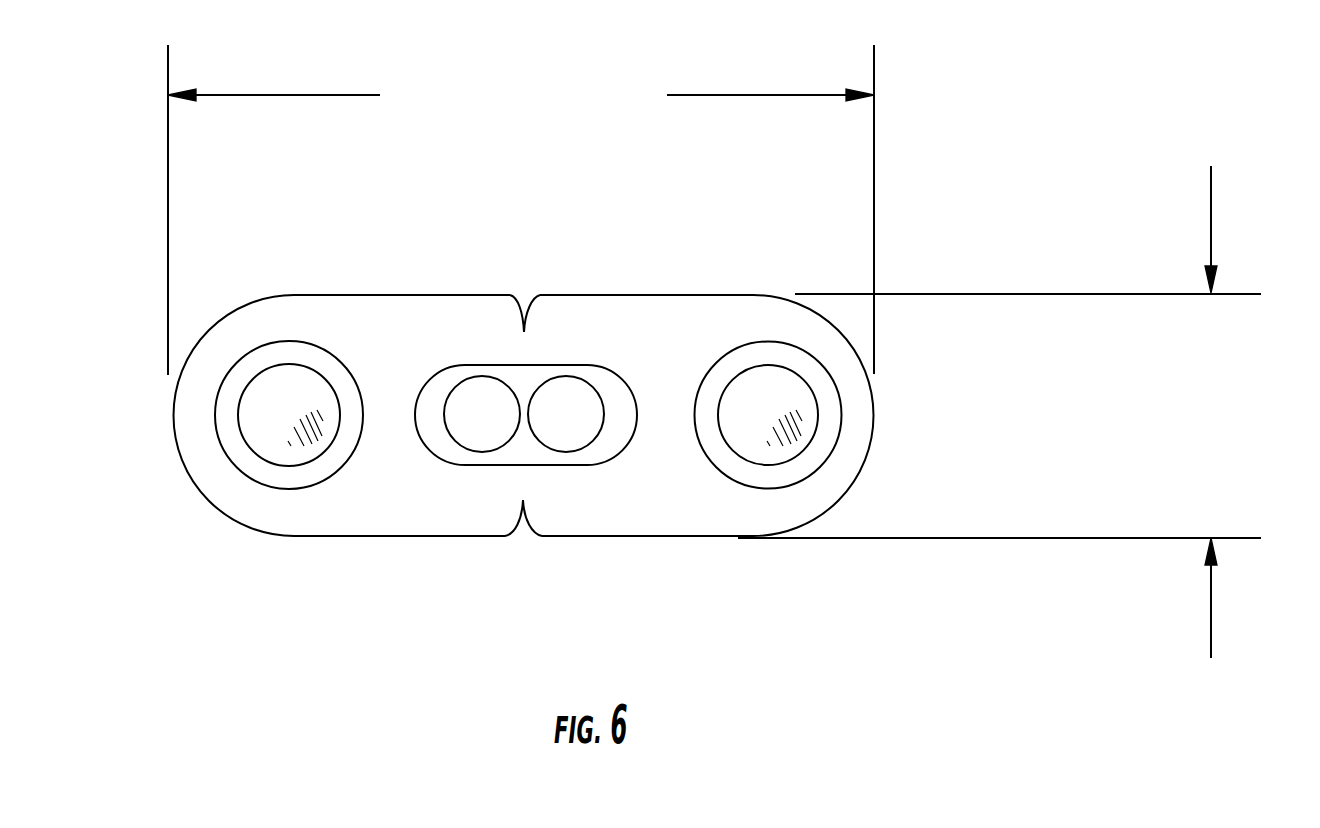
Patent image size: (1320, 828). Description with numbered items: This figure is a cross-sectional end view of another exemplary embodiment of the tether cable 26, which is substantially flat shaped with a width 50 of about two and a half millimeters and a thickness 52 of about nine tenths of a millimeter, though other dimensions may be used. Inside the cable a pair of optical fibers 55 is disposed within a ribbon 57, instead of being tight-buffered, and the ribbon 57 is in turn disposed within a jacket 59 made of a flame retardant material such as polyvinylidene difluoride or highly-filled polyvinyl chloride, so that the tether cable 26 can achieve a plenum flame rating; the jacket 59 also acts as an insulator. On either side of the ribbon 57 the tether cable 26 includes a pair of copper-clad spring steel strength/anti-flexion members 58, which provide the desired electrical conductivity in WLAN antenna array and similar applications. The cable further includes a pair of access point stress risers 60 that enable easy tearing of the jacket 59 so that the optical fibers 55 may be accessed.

The tether cable 26 is at (642, 293).
The width 50 is at (521, 110).
The thickness 52 is at (1198, 432).
The optical fibers 55 is at (482, 377).
The ribbon 57 is at (473, 465).
The strength/anti-flexion members 58 is at (303, 343).
The jacket 59 is at (678, 537).
The access point stress risers 60 is at (528, 548).